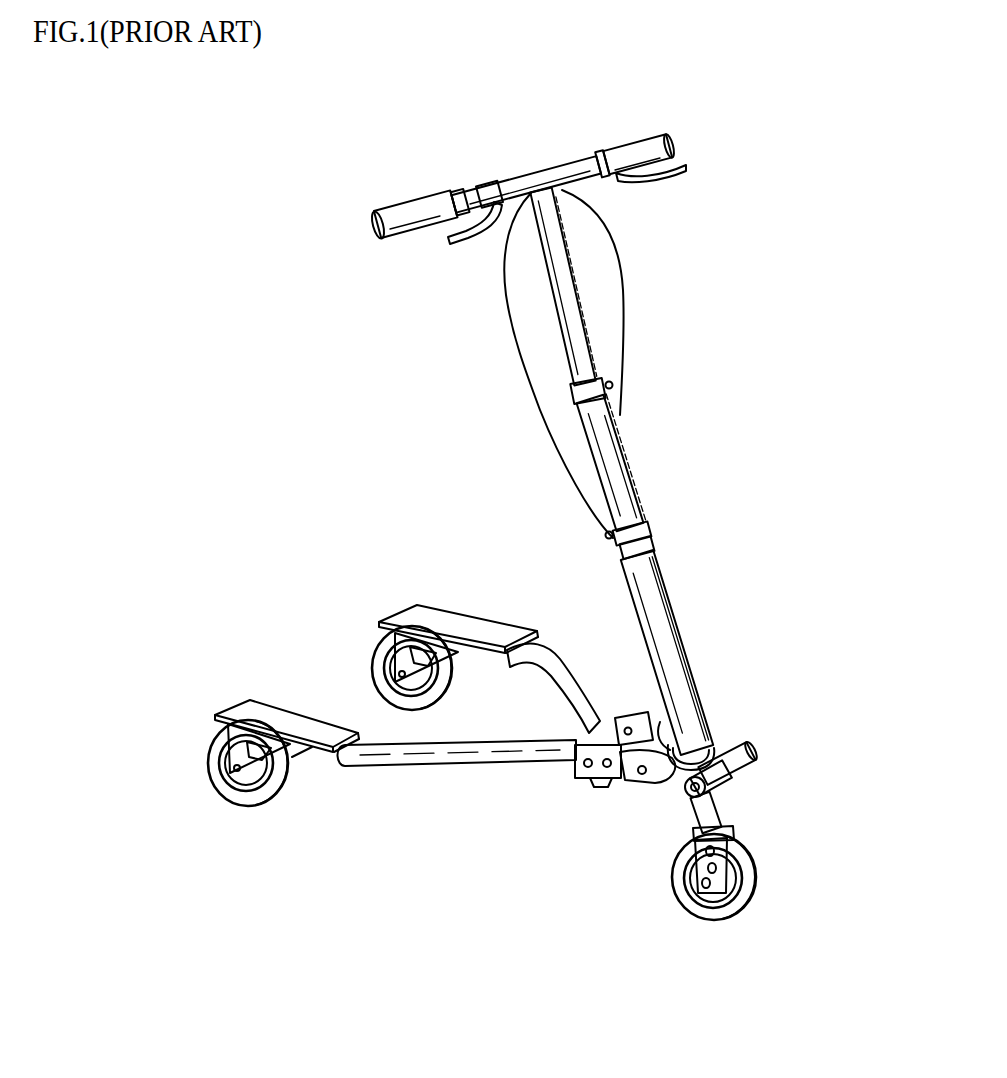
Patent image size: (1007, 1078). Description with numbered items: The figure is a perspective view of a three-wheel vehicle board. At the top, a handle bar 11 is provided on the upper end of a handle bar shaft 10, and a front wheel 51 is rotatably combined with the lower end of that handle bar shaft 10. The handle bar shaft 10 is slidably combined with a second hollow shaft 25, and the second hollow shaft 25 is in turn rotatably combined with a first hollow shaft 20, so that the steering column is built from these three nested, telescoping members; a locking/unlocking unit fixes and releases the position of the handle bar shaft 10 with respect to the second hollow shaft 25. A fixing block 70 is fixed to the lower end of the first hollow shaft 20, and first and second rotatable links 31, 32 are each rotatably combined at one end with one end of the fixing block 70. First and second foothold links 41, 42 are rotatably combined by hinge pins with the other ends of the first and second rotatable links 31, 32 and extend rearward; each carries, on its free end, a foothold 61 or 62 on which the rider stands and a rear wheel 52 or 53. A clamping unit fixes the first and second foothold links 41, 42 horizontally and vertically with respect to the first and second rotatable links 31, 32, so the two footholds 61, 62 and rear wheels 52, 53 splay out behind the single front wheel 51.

The handle bar shaft 10 is at (573, 313).
The handle bar 11 is at (641, 146).
The first hollow shaft 20 is at (680, 627).
The second hollow shaft 25 is at (621, 466).
The first rotatable link 31 is at (665, 775).
The second rotatable link 32 is at (722, 738).
The first foothold link 41 is at (475, 762).
The second foothold link 42 is at (563, 665).
The front wheel 51 is at (757, 885).
The rear wheel 52 is at (212, 752).
The rear wheel 53 is at (375, 650).
The foothold 61 is at (246, 707).
The foothold 62 is at (445, 615).
The fixing block 70 is at (730, 773).